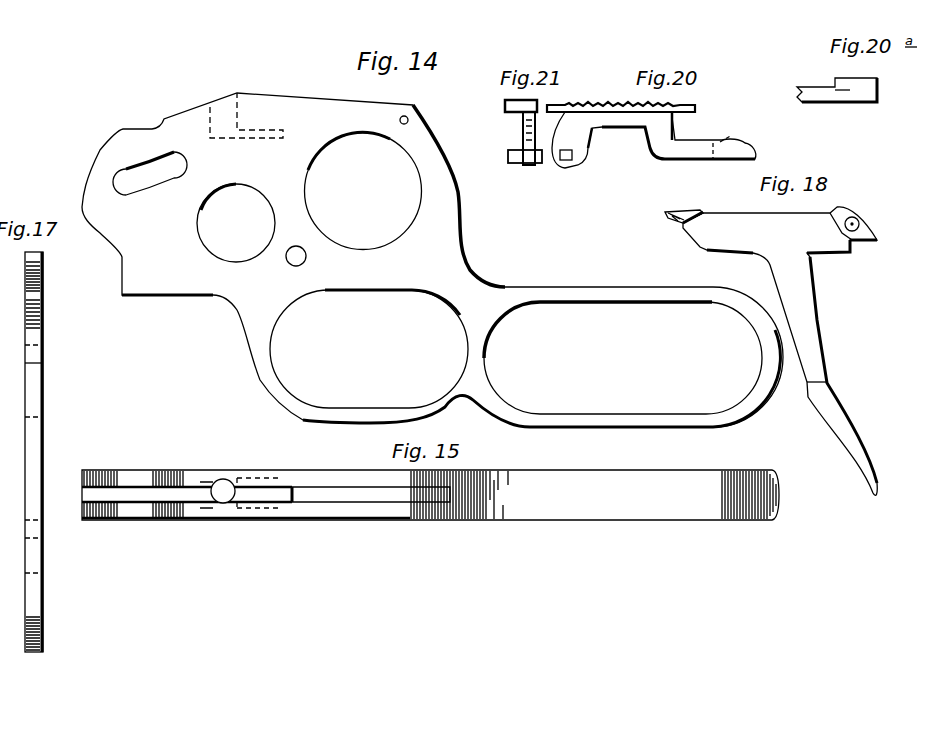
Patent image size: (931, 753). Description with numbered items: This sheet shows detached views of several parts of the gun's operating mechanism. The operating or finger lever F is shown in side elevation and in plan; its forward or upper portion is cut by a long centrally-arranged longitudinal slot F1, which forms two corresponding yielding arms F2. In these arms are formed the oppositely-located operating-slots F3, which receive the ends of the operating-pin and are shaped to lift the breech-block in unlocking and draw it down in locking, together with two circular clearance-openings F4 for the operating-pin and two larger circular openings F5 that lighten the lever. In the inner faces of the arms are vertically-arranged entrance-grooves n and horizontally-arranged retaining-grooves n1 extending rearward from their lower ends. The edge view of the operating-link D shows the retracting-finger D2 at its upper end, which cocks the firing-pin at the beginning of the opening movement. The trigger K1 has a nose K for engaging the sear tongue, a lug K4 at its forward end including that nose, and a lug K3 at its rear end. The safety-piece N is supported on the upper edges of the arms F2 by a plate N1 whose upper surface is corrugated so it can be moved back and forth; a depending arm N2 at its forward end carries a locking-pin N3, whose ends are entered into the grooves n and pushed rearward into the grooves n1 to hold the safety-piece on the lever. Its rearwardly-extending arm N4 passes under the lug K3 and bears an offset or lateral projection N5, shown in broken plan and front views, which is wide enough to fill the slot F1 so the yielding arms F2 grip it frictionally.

In FIG. 14, the operating or finger lever F is at (432, 260).
In FIG. 15, the operating or finger lever F is at (430, 495).
In FIG. 15, the longitudinal slot F1 is at (353, 497).
In FIG. 14, the yielding arms F2 is at (277, 170).
In FIG. 15, the yielding arms F2 is at (268, 472).
In FIG. 14, the operating-slots F3 is at (130, 168).
In FIG. 14, the circular clearance-openings F4 is at (197, 232).
In FIG. 14, the circular openings F5 is at (310, 180).
In FIG. 14, the entrance-grooves n is at (212, 108).
In FIG. 15, the entrance-grooves n is at (222, 511).
In FIG. 14, the retaining-grooves n1 is at (257, 128).
In FIG. 15, the retaining-grooves n1 is at (253, 509).
In FIG. 20, the safety-piece N is at (628, 120).
In FIG. 21, the plate N1 is at (504, 105).
In FIG. 20, the plate N1 is at (600, 104).
In FIG. 21, the depending arm N2 is at (522, 130).
In FIG. 20, the depending arm N2 is at (580, 143).
In FIG. 21, the locking-pin N3 is at (508, 156).
In FIG. 20, the locking-pin N3 is at (565, 162).
In FIG. 20, the rearwardly-extending arm N4 is at (703, 145).
In FIG. 20A, the rearwardly-extending arm N4 is at (815, 97).
In FIG. 20, the offset or lateral projection N5 is at (728, 138).
In FIG. 20A, the offset or lateral projection N5 is at (855, 84).
In FIG. 18, the nose K is at (677, 209).
In FIG. 18, the trigger K1 is at (780, 351).
In FIG. 18, the lug K3 is at (862, 229).
In FIG. 18, the lug K4 is at (703, 211).
In FIG. 17, the operating-link D is at (36, 460).
In FIG. 17, the retracting-finger D2 is at (44, 272).